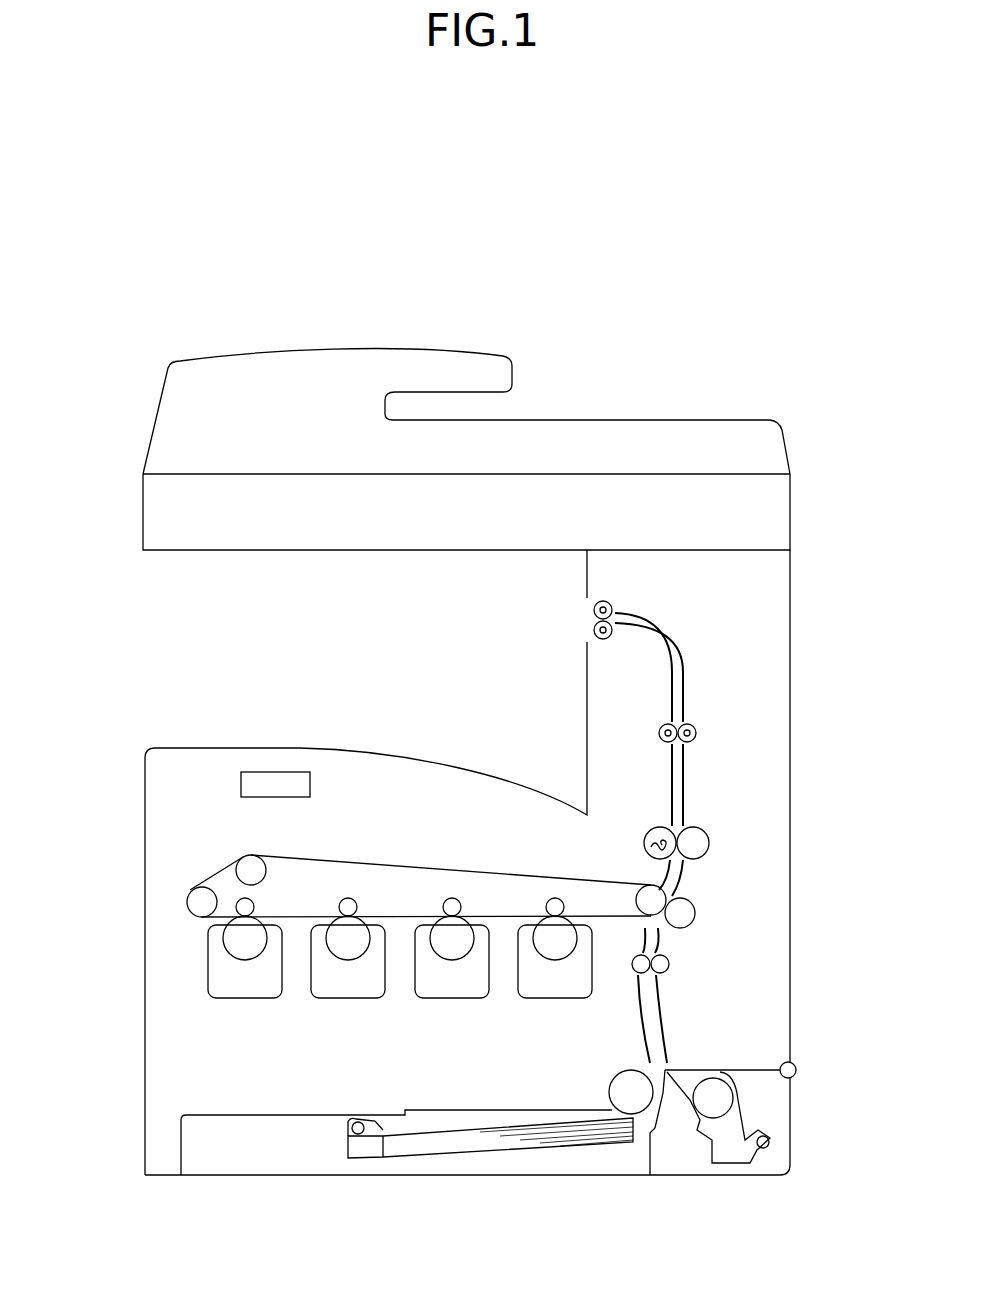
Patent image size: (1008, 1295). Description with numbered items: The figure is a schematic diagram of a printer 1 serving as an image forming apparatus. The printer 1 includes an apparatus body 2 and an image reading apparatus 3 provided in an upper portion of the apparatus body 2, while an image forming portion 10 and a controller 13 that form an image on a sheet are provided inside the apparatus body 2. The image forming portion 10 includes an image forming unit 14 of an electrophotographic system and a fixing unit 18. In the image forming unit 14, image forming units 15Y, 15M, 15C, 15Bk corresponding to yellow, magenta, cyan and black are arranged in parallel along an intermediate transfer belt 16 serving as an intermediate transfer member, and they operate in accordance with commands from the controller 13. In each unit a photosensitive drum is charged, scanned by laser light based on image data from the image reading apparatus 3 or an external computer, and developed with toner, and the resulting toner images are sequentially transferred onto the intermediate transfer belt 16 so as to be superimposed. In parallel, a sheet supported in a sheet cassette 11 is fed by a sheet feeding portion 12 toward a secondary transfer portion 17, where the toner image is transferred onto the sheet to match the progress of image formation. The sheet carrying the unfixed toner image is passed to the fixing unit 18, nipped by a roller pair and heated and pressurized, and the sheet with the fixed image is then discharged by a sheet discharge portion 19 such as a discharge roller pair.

The printer 1 is at (506, 290).
The apparatus body 2 is at (808, 615).
The image reading apparatus 3 is at (123, 487).
The image forming portion 10 is at (759, 856).
The sheet cassette 11 is at (171, 1100).
The sheet feeding portion 12 is at (608, 1080).
The controller 13 is at (277, 772).
The image forming unit 14 is at (179, 886).
The image forming unit for yellow 15Y is at (216, 1002).
The image forming unit for magenta 15M is at (319, 1002).
The image forming unit for cyan 15C is at (423, 1002).
The image forming unit for black 15Bk is at (526, 1002).
The intermediate transfer belt 16 is at (357, 857).
The secondary transfer portion 17 is at (684, 895).
The fixing unit 18 is at (713, 822).
The sheet discharge portion 19 is at (621, 604).